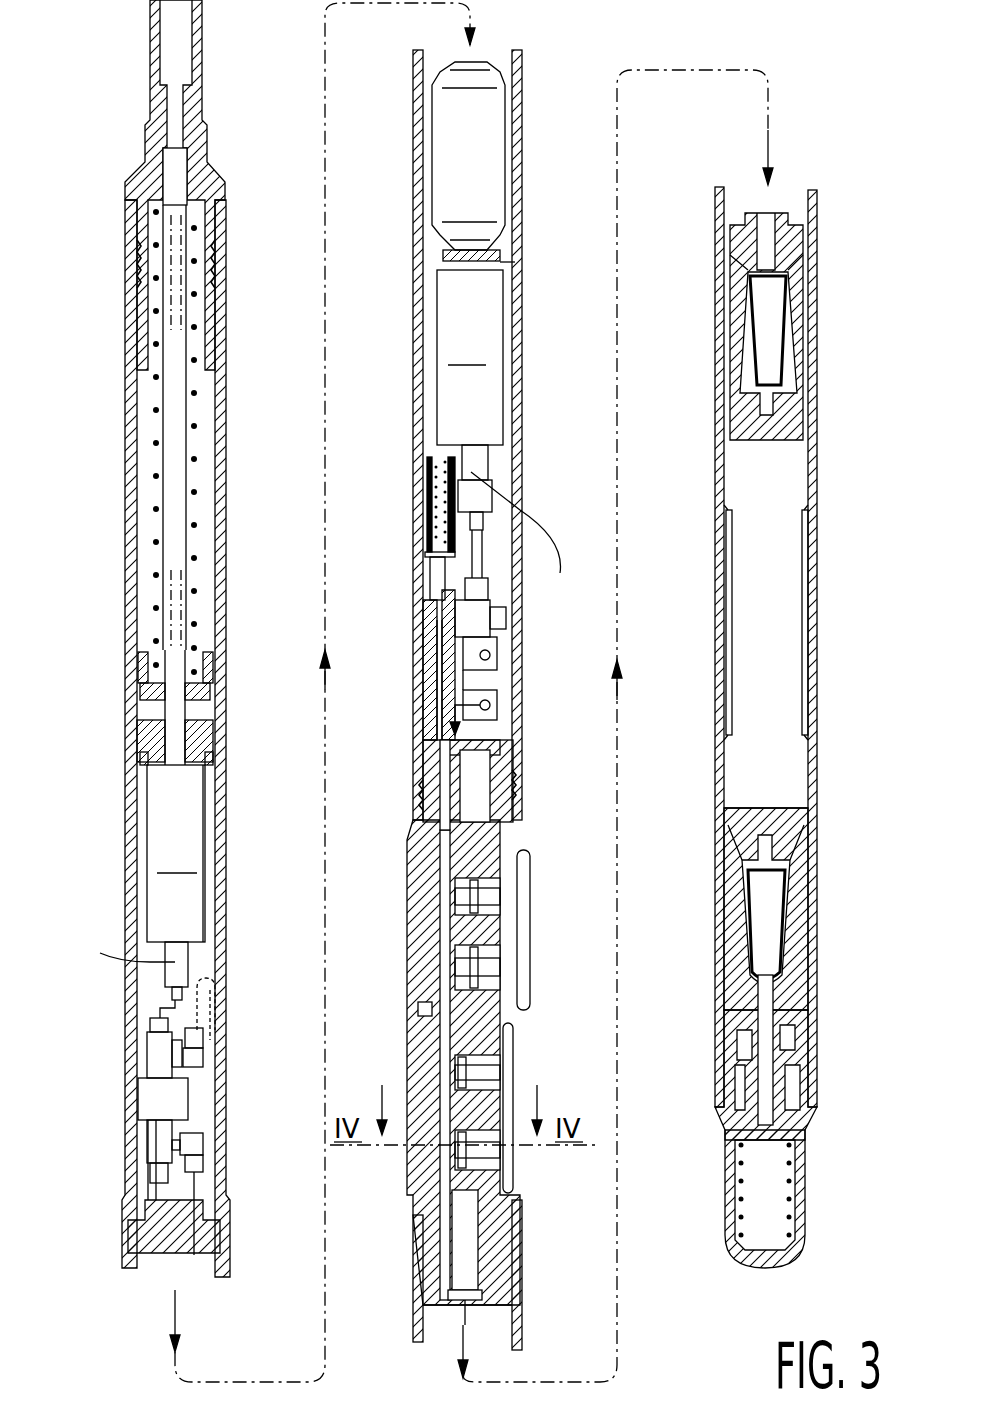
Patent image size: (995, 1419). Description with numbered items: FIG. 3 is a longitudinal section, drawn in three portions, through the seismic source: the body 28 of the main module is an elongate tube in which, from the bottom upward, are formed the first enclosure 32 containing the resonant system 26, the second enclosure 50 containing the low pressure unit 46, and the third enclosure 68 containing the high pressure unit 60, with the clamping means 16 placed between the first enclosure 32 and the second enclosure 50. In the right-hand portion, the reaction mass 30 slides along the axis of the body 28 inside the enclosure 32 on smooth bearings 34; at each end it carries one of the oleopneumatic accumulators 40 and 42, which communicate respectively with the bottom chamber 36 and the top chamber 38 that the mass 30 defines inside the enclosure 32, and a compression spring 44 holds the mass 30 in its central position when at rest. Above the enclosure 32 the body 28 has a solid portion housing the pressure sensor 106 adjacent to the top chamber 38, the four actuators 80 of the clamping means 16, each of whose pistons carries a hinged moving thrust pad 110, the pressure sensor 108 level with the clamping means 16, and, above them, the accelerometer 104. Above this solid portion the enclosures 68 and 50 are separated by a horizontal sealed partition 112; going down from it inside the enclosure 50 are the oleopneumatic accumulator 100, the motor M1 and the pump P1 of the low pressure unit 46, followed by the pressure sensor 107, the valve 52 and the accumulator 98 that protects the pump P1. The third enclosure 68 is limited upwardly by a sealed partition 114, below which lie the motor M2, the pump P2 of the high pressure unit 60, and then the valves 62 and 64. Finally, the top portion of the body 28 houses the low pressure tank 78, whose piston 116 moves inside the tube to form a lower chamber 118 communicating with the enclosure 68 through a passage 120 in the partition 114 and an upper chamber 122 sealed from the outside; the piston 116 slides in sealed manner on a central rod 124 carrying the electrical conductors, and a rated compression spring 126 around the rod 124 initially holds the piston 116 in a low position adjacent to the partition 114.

The clamping means 16 is at (525, 975).
The resonant system 26 is at (822, 470).
The body 28 is at (147, 380).
The reaction mass 30 is at (750, 578).
The first enclosure 32 is at (795, 600).
The smooth bearings 34 is at (805, 510).
The bottom chamber 36 is at (792, 1052).
The top chamber 38 is at (445, 1328).
The oleopneumatic accumulator 40 is at (790, 955).
The oleopneumatic accumulator 42 is at (797, 296).
The compression spring 44 is at (780, 1180).
The low pressure unit 46 is at (505, 300).
The second enclosure 50 is at (498, 458).
The valve 52 is at (480, 677).
The high pressure unit 60 is at (205, 930).
The valve 62 is at (200, 1073).
The valve 64 is at (205, 1140).
The third enclosure 68 is at (150, 980).
The low pressure tank 78 is at (230, 483).
The actuator 80 is at (445, 907).
The accumulator 98 is at (415, 549).
The oleopneumatic accumulator 100 is at (487, 110).
The accelerometer 104 is at (470, 773).
The pressure sensor 106 is at (465, 1222).
The pressure sensor 107 is at (498, 618).
The pressure sensor 108 is at (450, 950).
The moving thrust pad 110 is at (515, 1025).
The sealed partition 112 is at (155, 1242).
The sealed partition 114 is at (140, 757).
The piston 116 is at (148, 690).
The lower chamber 118 is at (210, 713).
The passage 120 is at (205, 745).
The upper chamber 122 is at (150, 487).
The central rod 124 is at (178, 334).
The rated compression spring 126 is at (195, 548).
The motor M1 is at (470, 357).
The motor M2 is at (176, 853).
The pump P1 is at (525, 539).
The pump P2 is at (131, 970).